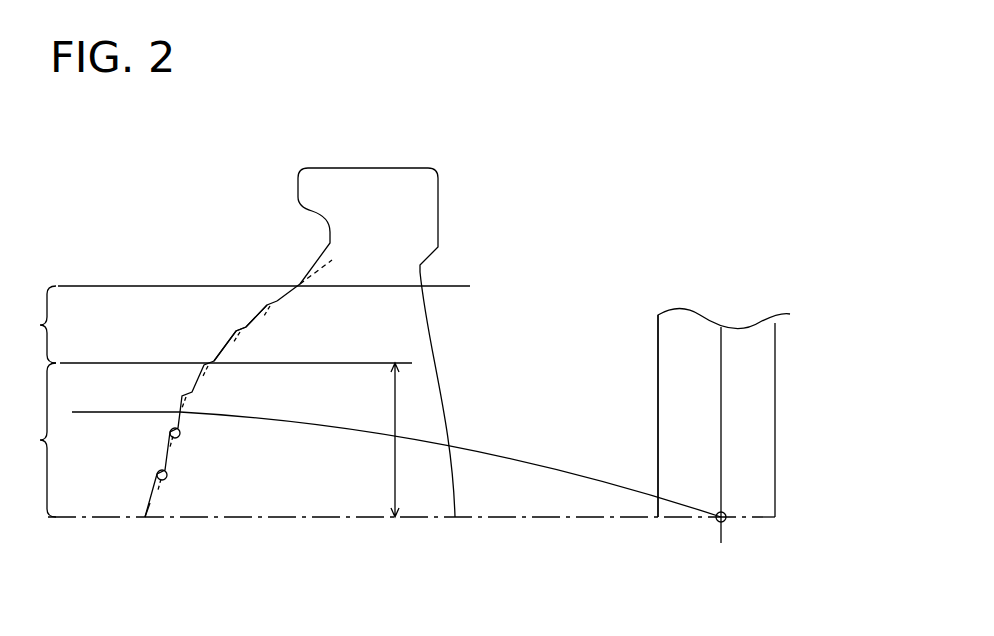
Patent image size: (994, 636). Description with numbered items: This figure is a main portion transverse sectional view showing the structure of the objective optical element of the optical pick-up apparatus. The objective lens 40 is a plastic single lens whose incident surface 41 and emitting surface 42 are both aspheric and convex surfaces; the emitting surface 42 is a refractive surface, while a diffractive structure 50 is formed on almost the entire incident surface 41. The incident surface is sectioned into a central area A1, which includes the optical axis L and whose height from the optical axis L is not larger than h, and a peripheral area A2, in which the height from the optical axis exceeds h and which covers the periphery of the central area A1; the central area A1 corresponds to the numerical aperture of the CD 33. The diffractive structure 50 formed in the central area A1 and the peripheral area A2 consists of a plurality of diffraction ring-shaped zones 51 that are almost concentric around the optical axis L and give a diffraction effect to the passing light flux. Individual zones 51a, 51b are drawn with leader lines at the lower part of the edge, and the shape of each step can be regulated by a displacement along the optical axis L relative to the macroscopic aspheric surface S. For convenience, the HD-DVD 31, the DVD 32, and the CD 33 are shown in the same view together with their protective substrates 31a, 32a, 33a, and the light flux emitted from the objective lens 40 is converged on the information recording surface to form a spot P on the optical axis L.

The objective lens 40 is at (378, 181).
The incident surface 41 is at (261, 293).
The emitting surface 42 is at (450, 344).
The diffractive structure 50 is at (184, 370).
The diffraction ring-shaped zones 51 is at (270, 312).
The first tooth tip 51a is at (158, 478).
The second tooth tip 51b is at (170, 435).
The first optical information recording medium 31 is at (773, 426).
The second optical information recording medium 32 is at (773, 426).
The third optical information recording medium 33 is at (755, 395).
The protective substrate 31a is at (578, 416).
The protective substrate 32a is at (578, 416).
The protective substrate 33a is at (665, 416).
The macroscopic aspheric surface S is at (166, 512).
The optical axis L is at (316, 521).
The spot P is at (712, 524).
The height h is at (405, 440).
The central area A1 is at (32, 440).
The peripheral area A2 is at (32, 324).